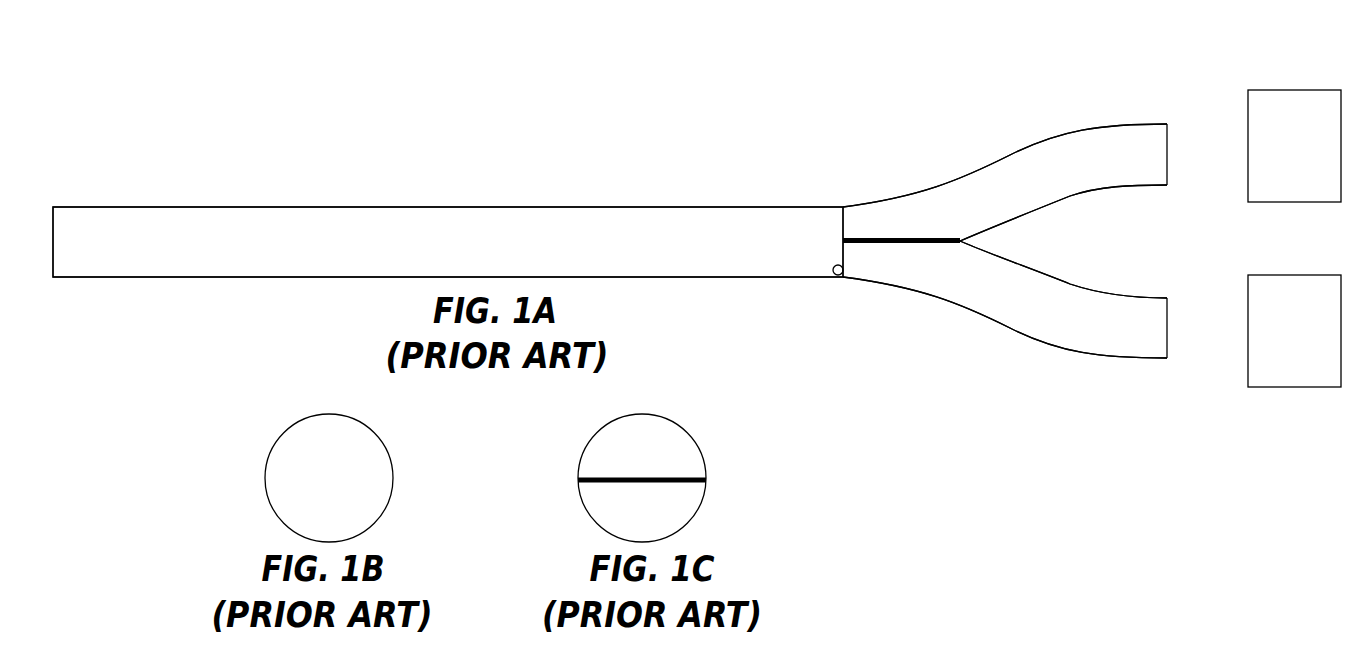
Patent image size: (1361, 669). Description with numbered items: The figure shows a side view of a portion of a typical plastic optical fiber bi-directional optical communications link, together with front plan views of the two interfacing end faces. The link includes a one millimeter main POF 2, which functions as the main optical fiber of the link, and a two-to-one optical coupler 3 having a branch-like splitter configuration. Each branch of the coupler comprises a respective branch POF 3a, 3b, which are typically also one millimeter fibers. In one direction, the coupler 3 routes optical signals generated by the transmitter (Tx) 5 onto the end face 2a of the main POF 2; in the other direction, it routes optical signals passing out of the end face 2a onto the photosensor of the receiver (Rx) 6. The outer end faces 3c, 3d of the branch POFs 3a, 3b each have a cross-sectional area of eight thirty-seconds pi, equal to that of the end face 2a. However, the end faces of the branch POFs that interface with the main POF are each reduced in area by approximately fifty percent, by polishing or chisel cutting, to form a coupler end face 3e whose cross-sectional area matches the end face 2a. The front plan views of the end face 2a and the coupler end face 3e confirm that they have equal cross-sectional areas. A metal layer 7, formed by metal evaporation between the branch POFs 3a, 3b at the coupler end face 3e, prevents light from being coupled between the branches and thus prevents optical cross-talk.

In FIG. 1A, the main POF 2 is at (604, 150).
In FIG. 1A, the end face of the main POF 2a is at (852, 222).
In FIG. 1B, the end face of the main POF 2a is at (343, 415).
In FIG. 1A, the 2-to-1 optical coupler 3 is at (1147, 78).
In FIG. 1A, the branch POF 3a is at (1003, 158).
In FIG. 1A, the branch POF 3b is at (1003, 317).
In FIG. 1A, the end face of branch POF 3a 3c is at (1168, 145).
In FIG. 1A, the end face of branch POF 3b 3d is at (1168, 328).
In FIG. 1A, the coupler end face 3e is at (843, 278).
In FIG. 1C, the coupler end face 3e is at (658, 415).
In FIG. 1A, the transmitter (Tx) 5 is at (1286, 174).
In FIG. 1A, the receiver (Rx) 6 is at (1286, 358).
In FIG. 1A, the metal layer 7 is at (917, 238).
In FIG. 1C, the metal layer 7 is at (701, 476).